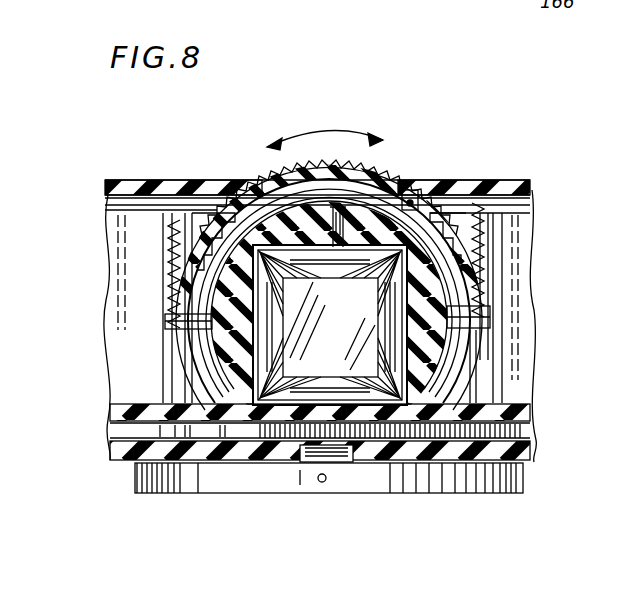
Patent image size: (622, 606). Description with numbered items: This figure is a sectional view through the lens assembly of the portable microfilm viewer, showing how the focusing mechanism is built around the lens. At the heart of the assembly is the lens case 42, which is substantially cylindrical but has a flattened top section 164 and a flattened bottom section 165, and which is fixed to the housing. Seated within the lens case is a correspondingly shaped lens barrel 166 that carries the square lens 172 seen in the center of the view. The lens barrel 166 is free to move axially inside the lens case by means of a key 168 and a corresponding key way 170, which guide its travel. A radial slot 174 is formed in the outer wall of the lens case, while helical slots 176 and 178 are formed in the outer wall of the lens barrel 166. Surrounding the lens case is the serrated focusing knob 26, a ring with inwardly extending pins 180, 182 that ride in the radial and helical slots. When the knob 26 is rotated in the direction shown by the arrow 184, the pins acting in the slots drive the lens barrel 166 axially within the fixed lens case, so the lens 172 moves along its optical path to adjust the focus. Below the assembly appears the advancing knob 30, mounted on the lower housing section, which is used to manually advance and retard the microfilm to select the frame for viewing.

The serrated focusing knob 26 is at (400, 195).
The advancing knob 30 is at (350, 483).
The lens case 42 is at (414, 200).
The flattened top section 164 is at (285, 190).
The flattened bottom section 165 is at (385, 410).
The lens barrel 166 is at (455, 290).
The key 168 is at (300, 178).
The key way 170 is at (338, 222).
The square lens 172 is at (393, 363).
The radial slot 174 is at (212, 264).
The helical slot 176 is at (505, 286).
The helical slot 178 is at (177, 283).
The inwardly extending pin 180 is at (468, 310).
The inwardly extending pin 182 is at (167, 322).
The arrow 184 is at (330, 133).